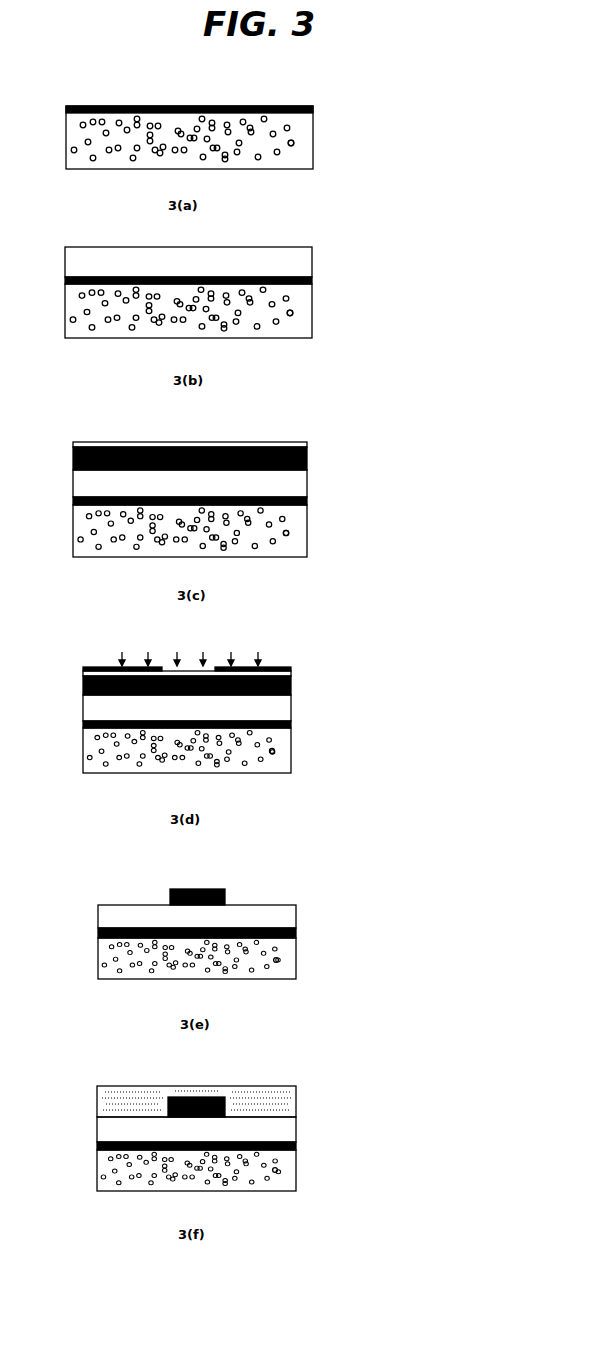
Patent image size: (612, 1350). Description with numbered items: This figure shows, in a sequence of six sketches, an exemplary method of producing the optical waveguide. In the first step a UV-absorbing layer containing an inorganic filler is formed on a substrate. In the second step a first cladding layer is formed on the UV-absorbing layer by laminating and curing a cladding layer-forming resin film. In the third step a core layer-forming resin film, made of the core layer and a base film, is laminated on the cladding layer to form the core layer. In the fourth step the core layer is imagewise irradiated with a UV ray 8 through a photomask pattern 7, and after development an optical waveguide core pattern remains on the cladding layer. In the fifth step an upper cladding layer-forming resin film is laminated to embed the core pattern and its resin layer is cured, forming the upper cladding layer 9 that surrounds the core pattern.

The photomask pattern 7 is at (291, 668).
The UV ray 8 is at (189, 653).
The upper cladding layer 9 is at (295, 1090).